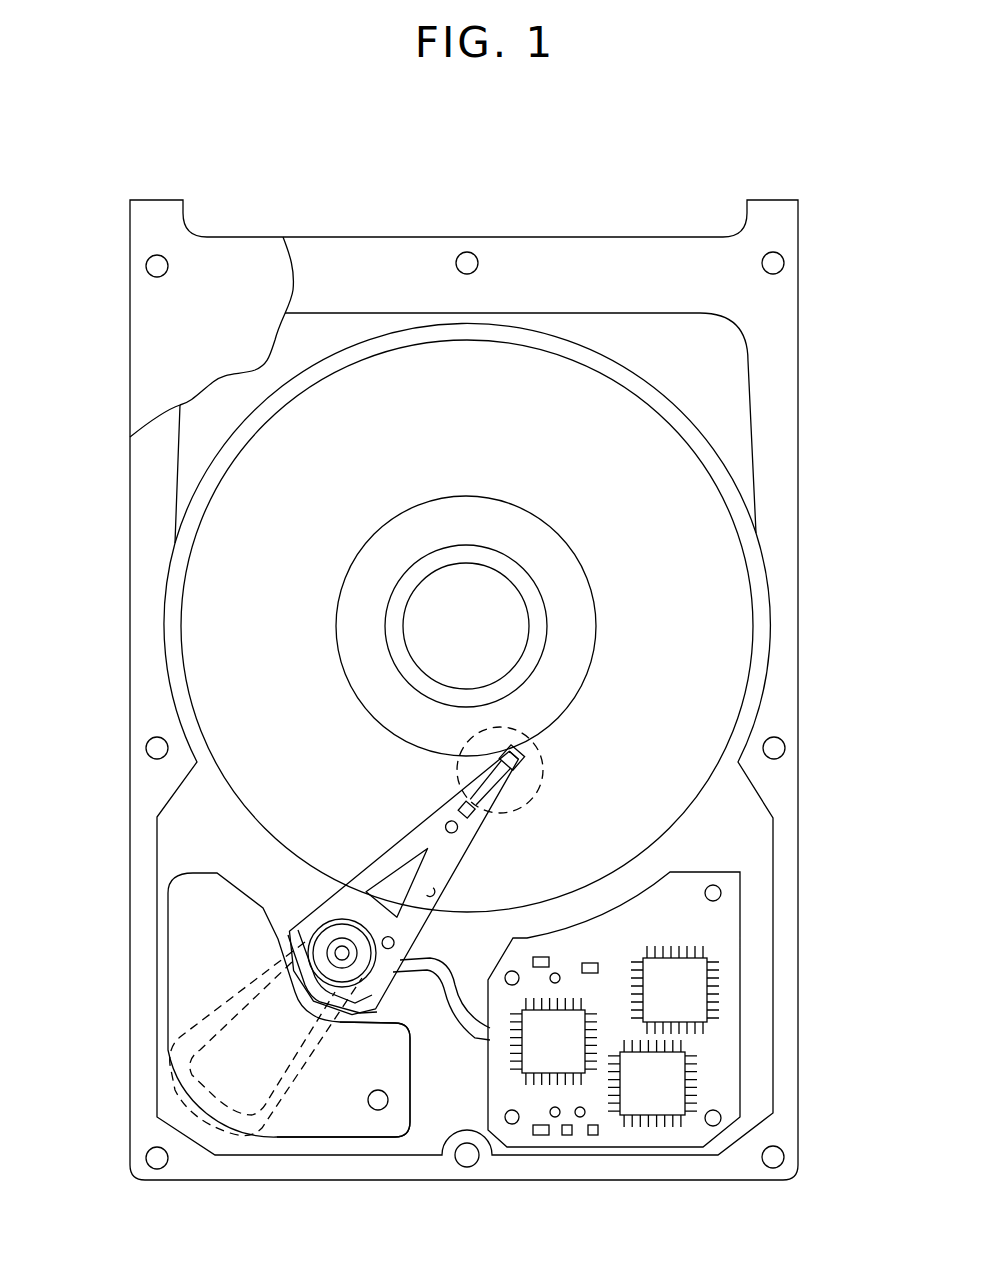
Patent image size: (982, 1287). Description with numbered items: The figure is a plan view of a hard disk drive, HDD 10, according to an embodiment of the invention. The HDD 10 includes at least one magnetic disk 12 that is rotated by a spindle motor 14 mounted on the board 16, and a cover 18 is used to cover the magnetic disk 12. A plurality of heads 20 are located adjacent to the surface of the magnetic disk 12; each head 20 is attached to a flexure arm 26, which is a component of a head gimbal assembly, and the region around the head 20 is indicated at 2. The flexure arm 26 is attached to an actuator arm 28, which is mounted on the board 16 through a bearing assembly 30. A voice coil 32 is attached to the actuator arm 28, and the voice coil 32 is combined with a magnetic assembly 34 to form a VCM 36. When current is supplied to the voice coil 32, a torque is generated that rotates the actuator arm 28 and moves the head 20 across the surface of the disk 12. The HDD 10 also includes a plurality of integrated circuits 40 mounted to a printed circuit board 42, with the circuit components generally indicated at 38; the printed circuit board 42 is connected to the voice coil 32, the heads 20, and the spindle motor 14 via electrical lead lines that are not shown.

The HDD 10 is at (773, 560).
The magnetic disk 12 is at (589, 476).
The spindle motor 14 is at (490, 628).
The board 16 is at (717, 388).
The cover 18 is at (157, 327).
The head 20 is at (517, 753).
The head region 2 is at (543, 768).
The flexure arm 26 is at (483, 795).
The actuator arm 28 is at (348, 902).
The bearing assembly 30 is at (327, 968).
The voice coil 32 is at (153, 1047).
The magnetic assembly 34 is at (337, 1125).
The VCM 36 is at (248, 1123).
The circuit elements 38 is at (716, 1048).
The integrated circuits 40 is at (650, 1095).
The printed circuit board 42 is at (725, 930).